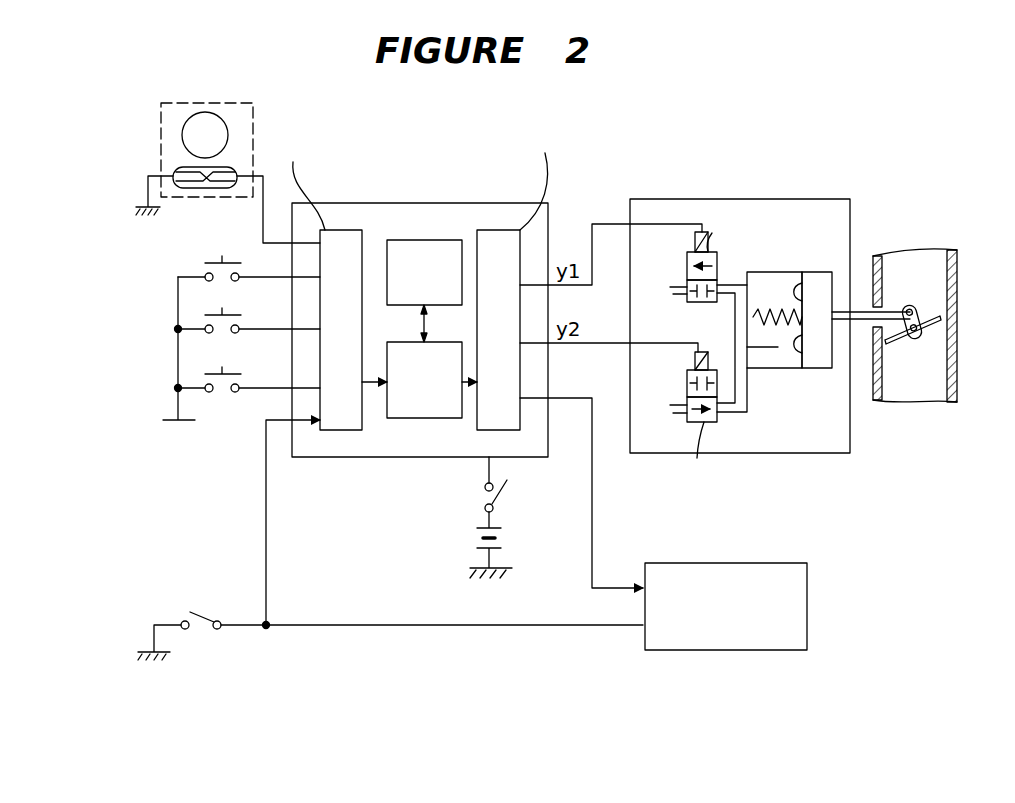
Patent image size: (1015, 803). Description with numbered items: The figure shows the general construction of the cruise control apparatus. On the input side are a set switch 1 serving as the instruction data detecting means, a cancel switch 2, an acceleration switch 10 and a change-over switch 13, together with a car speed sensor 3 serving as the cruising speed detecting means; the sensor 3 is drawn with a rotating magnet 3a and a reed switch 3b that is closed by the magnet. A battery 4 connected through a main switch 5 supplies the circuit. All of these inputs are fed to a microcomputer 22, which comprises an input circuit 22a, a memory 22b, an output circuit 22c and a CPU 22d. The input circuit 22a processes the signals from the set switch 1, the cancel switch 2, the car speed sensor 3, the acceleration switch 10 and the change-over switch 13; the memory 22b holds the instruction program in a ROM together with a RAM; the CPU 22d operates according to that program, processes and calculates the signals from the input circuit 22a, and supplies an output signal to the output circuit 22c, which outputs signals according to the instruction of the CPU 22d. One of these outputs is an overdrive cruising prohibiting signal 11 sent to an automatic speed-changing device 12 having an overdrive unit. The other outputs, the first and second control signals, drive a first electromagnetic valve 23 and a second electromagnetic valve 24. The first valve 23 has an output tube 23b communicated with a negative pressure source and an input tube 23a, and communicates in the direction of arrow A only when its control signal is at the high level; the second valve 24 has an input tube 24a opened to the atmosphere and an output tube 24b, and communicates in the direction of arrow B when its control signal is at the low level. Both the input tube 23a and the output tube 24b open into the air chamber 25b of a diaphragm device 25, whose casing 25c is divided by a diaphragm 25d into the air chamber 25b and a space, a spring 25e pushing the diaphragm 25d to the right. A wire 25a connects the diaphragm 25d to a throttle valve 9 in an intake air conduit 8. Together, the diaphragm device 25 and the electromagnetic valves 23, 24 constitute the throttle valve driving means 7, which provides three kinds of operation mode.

The set switch 1 is at (235, 262).
The cancel switch 2 is at (242, 386).
The car speed sensor 3 is at (199, 156).
The magnet 3a is at (183, 133).
The reed switch 3b is at (203, 190).
The battery 4 is at (504, 540).
The main switch 5 is at (513, 493).
The throttle valve driving means 7 is at (770, 315).
The intake air conduit 8 is at (917, 280).
The throttle valve 9 is at (937, 321).
The acceleration switch 10 is at (238, 326).
The overdrive cruising prohibiting signal 11 is at (594, 518).
The automatic speed-changing device 12 is at (758, 563).
The change-over switch 13 is at (187, 612).
The microcomputer 22 is at (418, 303).
The input circuit 22a is at (333, 230).
The memory 22b is at (415, 240).
The output circuit 22c is at (500, 230).
The CPU 22d is at (422, 418).
The first electromagnetic valve 23 is at (685, 250).
The input tube 23a is at (718, 297).
The output tube 23b is at (673, 295).
The second electromagnetic valve 24 is at (708, 416).
The input tube 24a is at (680, 405).
The output tube 24b is at (719, 422).
The diaphragm device 25 is at (822, 310).
The wire 25a is at (838, 312).
The air chamber 25b is at (760, 275).
The casing 25c is at (773, 370).
The diaphragm 25d is at (803, 354).
The spring 25e is at (763, 330).